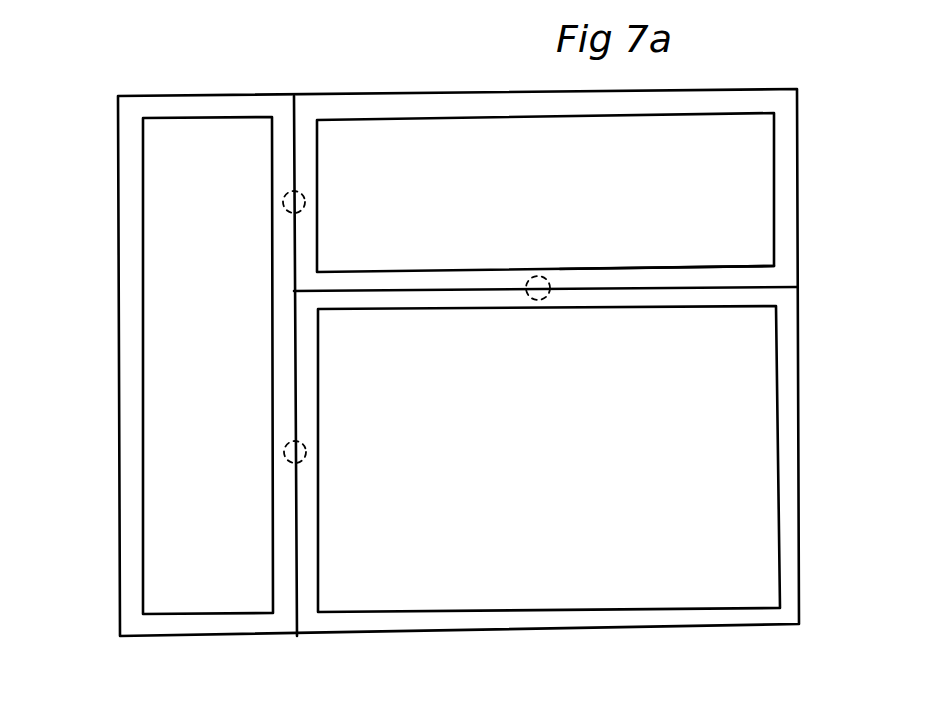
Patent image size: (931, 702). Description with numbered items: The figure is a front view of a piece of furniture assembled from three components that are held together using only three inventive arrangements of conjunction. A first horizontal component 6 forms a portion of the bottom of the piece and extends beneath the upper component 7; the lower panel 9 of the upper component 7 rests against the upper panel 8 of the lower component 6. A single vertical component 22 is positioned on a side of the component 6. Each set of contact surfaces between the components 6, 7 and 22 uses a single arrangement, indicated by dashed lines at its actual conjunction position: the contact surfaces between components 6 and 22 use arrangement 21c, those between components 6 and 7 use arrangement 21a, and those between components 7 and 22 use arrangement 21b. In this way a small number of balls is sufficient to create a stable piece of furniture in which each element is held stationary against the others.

The lower element 6 is at (788, 481).
The upper element 7 is at (785, 210).
The upper panel 8 is at (740, 297).
The lower panel 9 is at (755, 276).
The vertical component 22 is at (130, 392).
The arrangement of conjunction 21a is at (541, 282).
The arrangement of conjunction 21b is at (305, 200).
The arrangement of conjunction 21c is at (307, 450).